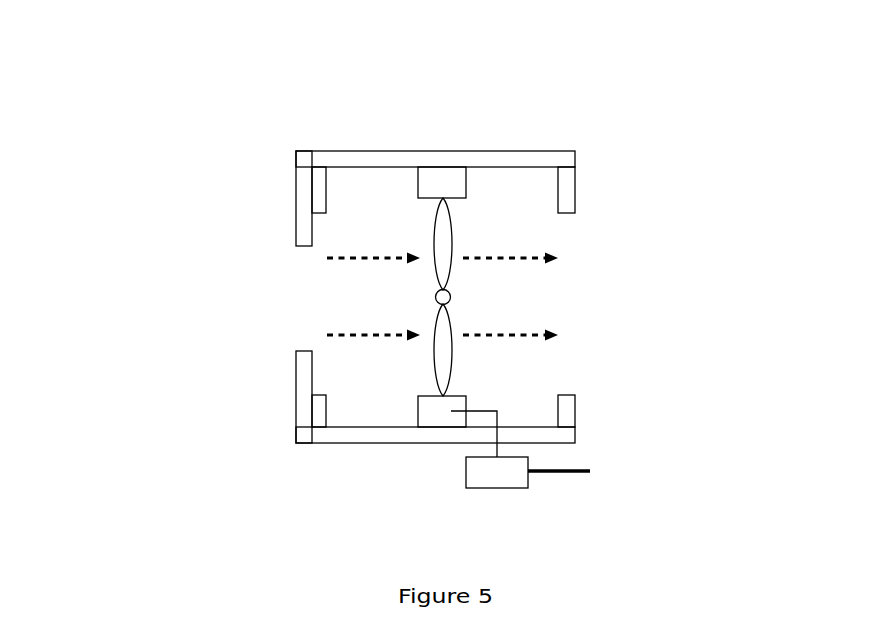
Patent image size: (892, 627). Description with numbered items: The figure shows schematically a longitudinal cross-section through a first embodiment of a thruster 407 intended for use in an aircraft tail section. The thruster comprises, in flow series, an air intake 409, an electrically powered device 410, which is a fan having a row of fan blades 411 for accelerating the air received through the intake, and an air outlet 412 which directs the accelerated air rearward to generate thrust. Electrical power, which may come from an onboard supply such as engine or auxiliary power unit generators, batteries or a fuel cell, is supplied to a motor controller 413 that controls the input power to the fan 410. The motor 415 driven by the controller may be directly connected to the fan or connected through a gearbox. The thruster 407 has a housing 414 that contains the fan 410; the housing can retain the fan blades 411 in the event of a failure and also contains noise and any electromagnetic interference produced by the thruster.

The thruster 407 is at (200, 148).
The air intake 409 is at (308, 307).
The electrically powered device 410 is at (400, 399).
The fan blades 411 is at (442, 237).
The air outlet 412 is at (576, 331).
The motor controller 413 is at (467, 472).
The housing 414 is at (476, 157).
The motor 415 is at (422, 417).